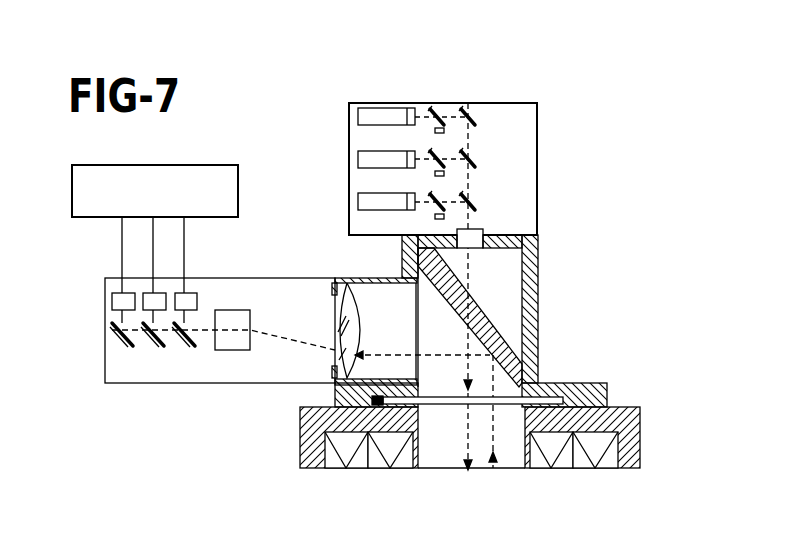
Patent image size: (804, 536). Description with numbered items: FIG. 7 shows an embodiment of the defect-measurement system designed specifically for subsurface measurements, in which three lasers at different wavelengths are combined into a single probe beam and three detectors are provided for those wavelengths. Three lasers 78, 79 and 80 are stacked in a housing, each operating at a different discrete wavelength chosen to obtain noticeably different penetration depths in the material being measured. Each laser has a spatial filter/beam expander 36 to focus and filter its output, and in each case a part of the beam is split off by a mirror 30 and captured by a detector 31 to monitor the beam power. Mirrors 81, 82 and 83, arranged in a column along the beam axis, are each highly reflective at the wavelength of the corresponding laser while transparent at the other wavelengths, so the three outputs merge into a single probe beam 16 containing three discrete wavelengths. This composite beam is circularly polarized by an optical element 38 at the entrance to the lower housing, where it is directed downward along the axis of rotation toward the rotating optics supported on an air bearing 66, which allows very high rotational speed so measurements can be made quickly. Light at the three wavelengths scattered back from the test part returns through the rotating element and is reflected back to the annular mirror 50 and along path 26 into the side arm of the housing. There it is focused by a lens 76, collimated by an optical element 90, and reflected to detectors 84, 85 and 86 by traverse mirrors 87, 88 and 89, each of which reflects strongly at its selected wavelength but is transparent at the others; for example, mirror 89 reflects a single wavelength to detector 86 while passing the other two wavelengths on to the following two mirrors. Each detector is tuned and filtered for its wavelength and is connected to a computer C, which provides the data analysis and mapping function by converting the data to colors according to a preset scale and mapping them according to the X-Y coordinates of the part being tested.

The computer C is at (72, 185).
The probe beam 16 is at (470, 270).
The path 26 is at (407, 353).
The mirror 30 is at (436, 108).
The detector 31 is at (446, 130).
The spatial filter/beam expander 36 is at (414, 112).
The optical element 38 is at (483, 227).
The annular mirror 50 is at (510, 347).
The air bearing 66 is at (573, 395).
The lens 76 is at (350, 292).
The laser 78 is at (358, 117).
The laser 79 is at (358, 160).
The laser 80 is at (358, 202).
The mirror 81 is at (470, 110).
The mirror 82 is at (472, 160).
The mirror 83 is at (472, 204).
The detector 84 is at (115, 295).
The detector 85 is at (160, 293).
The detector 86 is at (195, 293).
The traverse mirror 87 is at (125, 345).
The traverse mirror 88 is at (160, 347).
The traverse mirror 89 is at (187, 346).
The optical element 90 is at (240, 310).